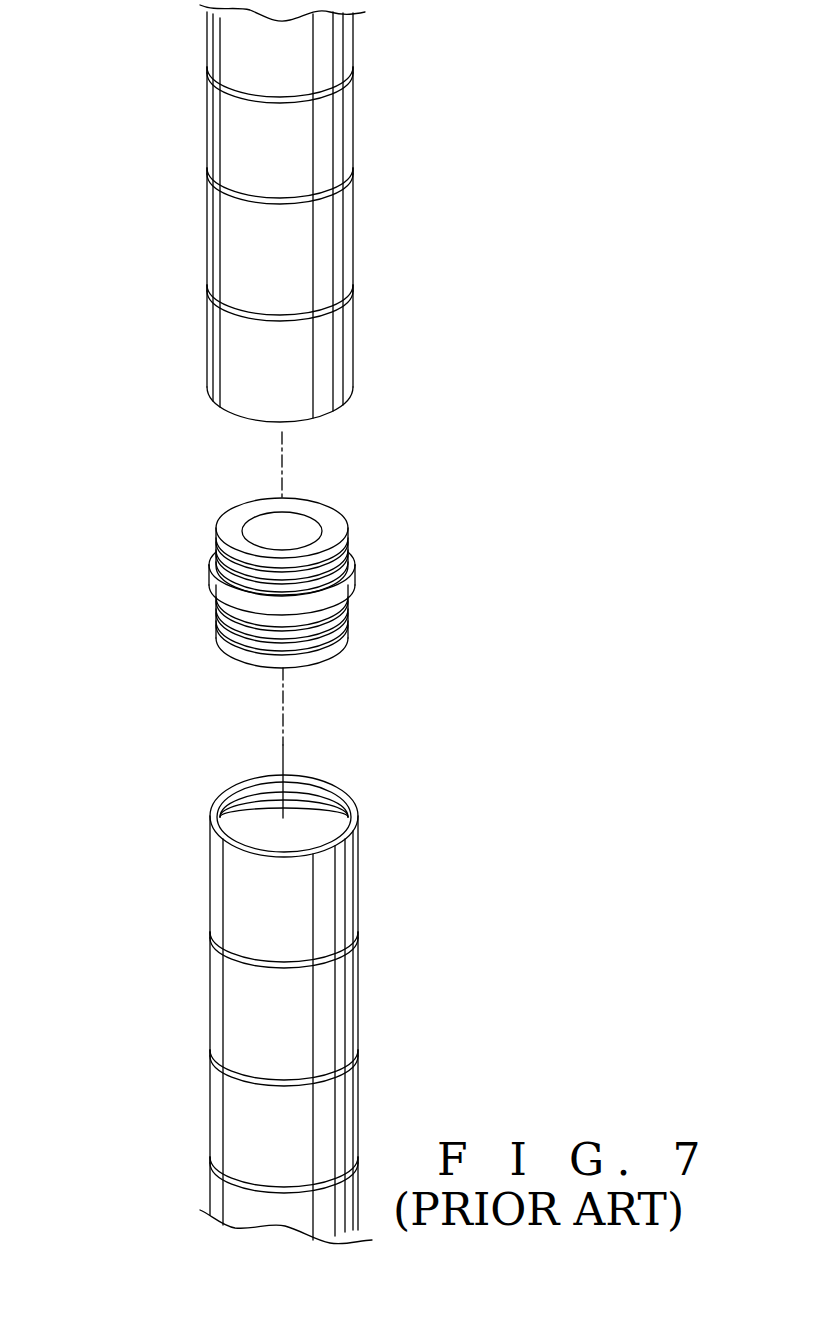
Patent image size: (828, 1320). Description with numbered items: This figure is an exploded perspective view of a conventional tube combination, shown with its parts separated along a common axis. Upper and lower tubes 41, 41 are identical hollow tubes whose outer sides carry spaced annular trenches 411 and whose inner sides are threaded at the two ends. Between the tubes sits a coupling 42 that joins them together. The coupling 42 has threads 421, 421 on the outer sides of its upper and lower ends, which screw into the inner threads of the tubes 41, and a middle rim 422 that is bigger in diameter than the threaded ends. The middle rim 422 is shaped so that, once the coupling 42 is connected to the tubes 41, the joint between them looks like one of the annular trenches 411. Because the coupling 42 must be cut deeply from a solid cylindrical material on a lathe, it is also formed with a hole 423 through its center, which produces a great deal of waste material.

The tube 41 is at (270, 624).
The annular trench 411 is at (284, 630).
The coupling 42 is at (306, 635).
The threads 421 is at (296, 642).
The middle rim 422 is at (352, 577).
The hole 423 is at (228, 502).